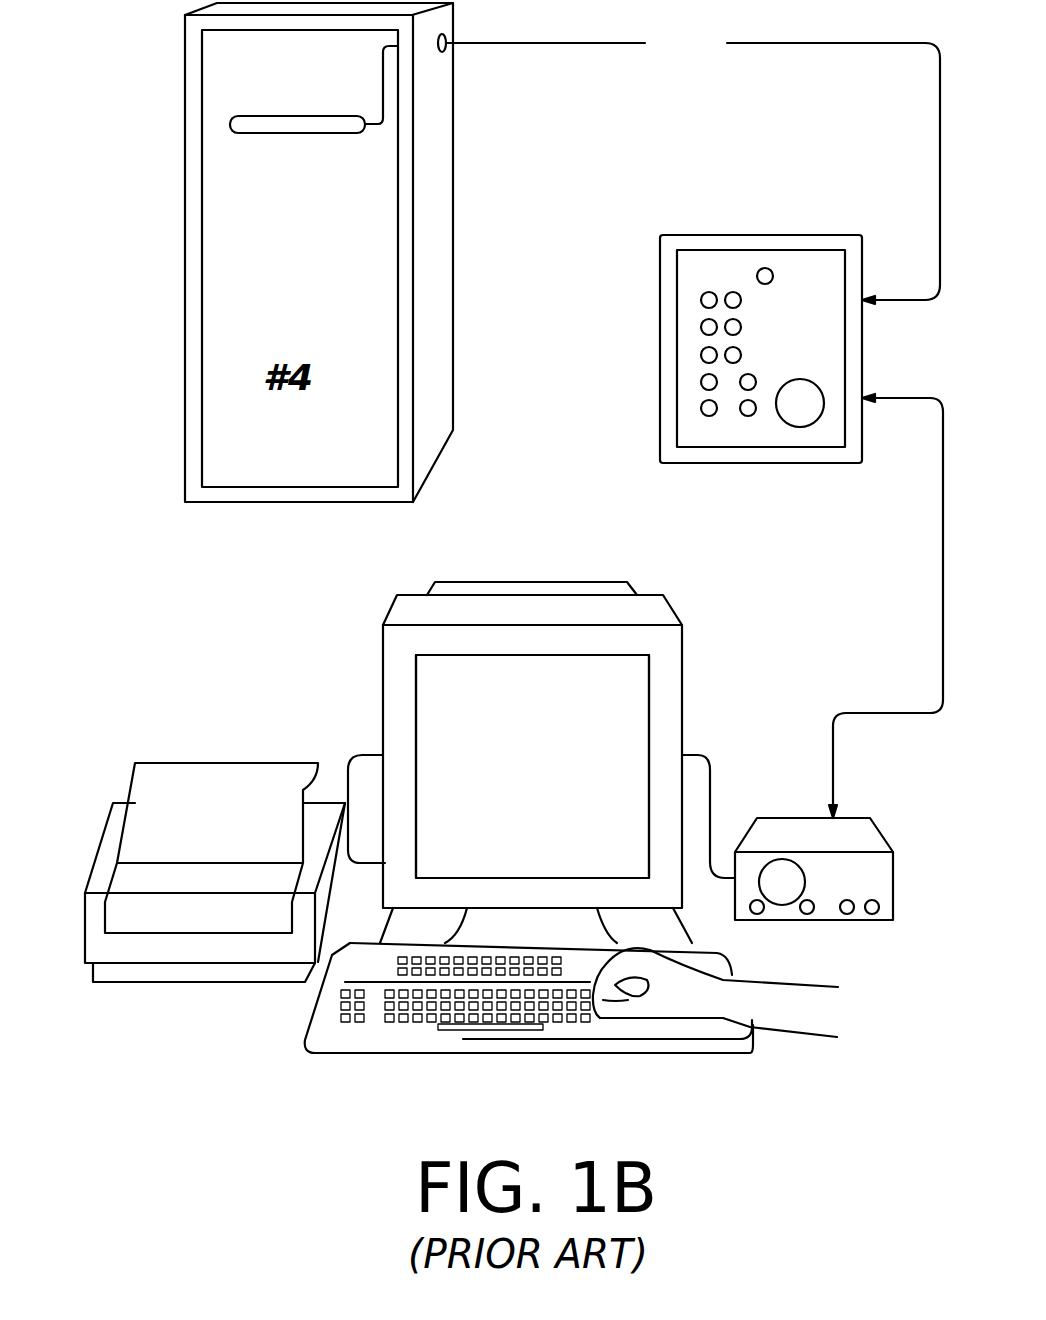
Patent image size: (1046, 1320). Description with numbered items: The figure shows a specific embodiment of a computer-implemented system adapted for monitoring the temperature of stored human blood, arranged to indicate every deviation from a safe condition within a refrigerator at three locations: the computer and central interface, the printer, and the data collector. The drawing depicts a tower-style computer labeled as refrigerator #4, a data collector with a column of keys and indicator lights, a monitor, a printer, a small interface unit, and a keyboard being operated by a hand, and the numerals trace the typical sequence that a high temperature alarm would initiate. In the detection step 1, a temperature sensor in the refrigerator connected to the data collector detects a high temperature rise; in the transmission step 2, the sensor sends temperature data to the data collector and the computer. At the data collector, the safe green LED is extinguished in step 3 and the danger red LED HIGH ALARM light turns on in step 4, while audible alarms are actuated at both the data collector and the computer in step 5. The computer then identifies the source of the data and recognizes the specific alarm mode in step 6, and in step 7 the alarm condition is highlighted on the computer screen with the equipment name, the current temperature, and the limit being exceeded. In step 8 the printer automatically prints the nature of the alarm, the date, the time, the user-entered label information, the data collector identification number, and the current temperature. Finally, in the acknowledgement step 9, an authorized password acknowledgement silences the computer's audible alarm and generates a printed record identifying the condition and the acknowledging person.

The temperature sensor detection step 1 is at (298, 145).
The temperature data transmission step 2 is at (689, 153).
The safe green LED extinguishing step 3 is at (763, 240).
The danger red LED alarm step 4 is at (690, 302).
The audible alarm actuation step 5 is at (774, 848).
The computer source identification step 6 is at (532, 766).
The screen alarm highlighting step 7 is at (532, 766).
The automatic printer alarm printout step 8 is at (217, 763).
The authorized acknowledgement step 9 is at (753, 1002).